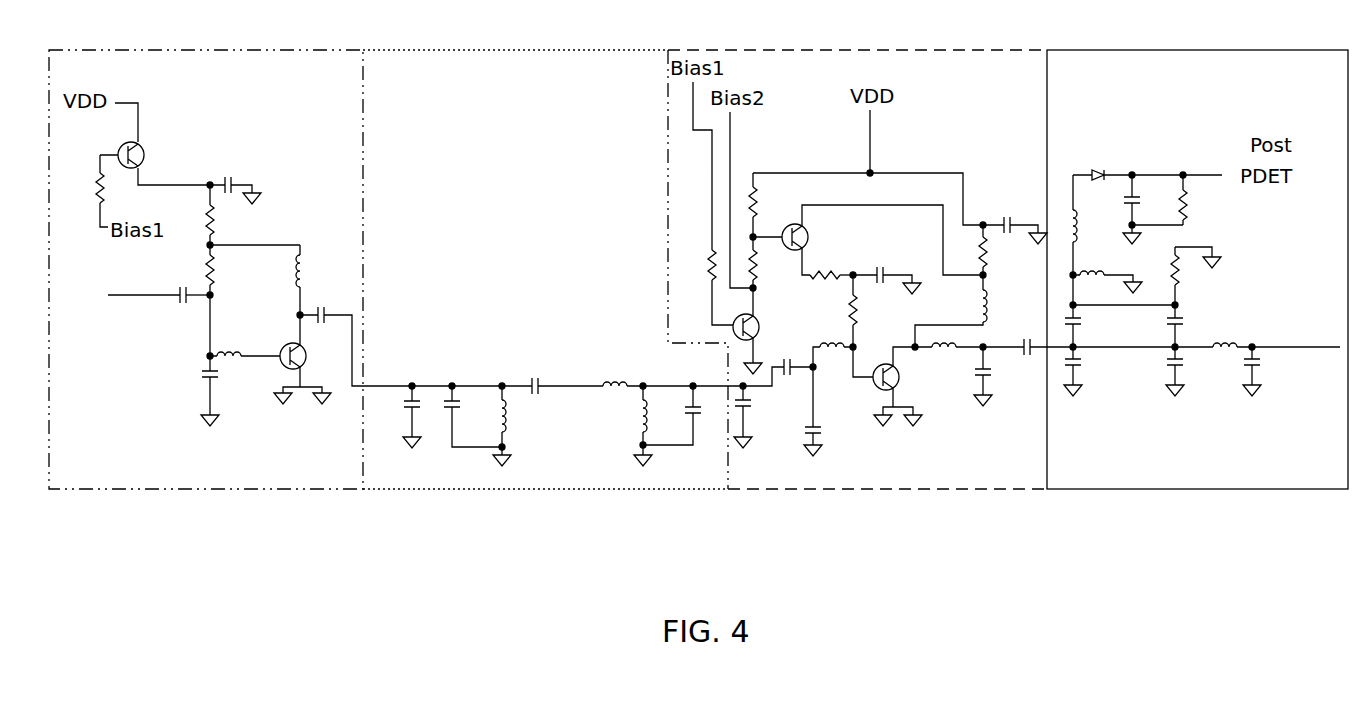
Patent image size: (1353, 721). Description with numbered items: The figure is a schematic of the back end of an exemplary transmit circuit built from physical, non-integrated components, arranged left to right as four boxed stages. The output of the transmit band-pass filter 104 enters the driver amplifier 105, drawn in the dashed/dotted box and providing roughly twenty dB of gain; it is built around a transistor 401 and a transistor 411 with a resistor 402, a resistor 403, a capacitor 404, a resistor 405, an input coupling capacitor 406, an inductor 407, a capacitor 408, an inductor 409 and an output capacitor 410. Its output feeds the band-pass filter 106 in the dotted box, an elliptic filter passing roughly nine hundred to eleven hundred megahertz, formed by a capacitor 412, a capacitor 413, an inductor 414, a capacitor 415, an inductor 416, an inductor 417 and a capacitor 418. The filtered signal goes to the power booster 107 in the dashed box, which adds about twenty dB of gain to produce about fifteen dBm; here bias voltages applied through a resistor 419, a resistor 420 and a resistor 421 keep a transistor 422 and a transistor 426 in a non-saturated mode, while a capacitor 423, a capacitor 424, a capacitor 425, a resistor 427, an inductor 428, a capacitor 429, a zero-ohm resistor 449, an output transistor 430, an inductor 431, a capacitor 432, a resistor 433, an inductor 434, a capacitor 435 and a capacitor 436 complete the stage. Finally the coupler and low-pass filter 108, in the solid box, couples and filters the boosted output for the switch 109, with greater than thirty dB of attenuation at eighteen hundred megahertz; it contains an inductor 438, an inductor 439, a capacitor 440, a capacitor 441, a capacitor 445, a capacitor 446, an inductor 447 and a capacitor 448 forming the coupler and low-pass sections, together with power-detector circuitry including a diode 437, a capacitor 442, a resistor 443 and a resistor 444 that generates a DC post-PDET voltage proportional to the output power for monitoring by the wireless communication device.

The transmit band-pass filter 104 is at (120, 301).
The driver amplifier 105 is at (206, 249).
The transmit band-pass filter 106 is at (545, 249).
The power booster 107 is at (857, 249).
The coupler and low-pass filter 108 is at (1197, 249).
The switch 109 is at (1296, 304).
The transistor 401 is at (155, 157).
The resistor 402 is at (87, 191).
The resistor 403 is at (191, 215).
The capacitor 404 is at (245, 180).
The resistor 405 is at (233, 270).
The capacitor 406 is at (177, 285).
The inductor 407 is at (245, 342).
The capacitor 408 is at (190, 391).
The inductor 409 is at (284, 280).
The capacitor 410 is at (332, 329).
The transistor 411 is at (313, 359).
The capacitor 412 is at (397, 417).
The capacitor 413 is at (467, 397).
The inductor 414 is at (521, 426).
The capacitor 415 is at (539, 371).
The inductor 416 is at (606, 372).
The inductor 417 is at (624, 426).
The capacitor 418 is at (672, 415).
The resistor 419 is at (703, 287).
The resistor 420 is at (772, 205).
The resistor 421 is at (774, 262).
The transistor 422 is at (764, 331).
The capacitor 423 is at (778, 357).
The capacitor 424 is at (765, 417).
The capacitor 425 is at (794, 411).
The transistor 426 is at (868, 240).
The resistor 427 is at (830, 287).
The inductor 428 is at (834, 365).
The capacitor 429 is at (887, 266).
The transistor 430 is at (882, 386).
The inductor 431 is at (949, 362).
The capacitor 432 is at (1015, 216).
The resistor 433 is at (1003, 250).
The inductor 434 is at (1005, 298).
The capacitor 435 is at (1028, 335).
The capacitor 436 is at (1005, 376).
The diode 437 is at (1147, 159).
The inductor 438 is at (1095, 225).
The inductor 439 is at (1107, 273).
The capacitor 440 is at (1095, 326).
The capacitor 441 is at (1094, 371).
The capacitor 442 is at (1153, 209).
The resistor 443 is at (1204, 200).
The resistor 444 is at (1196, 276).
The capacitor 445 is at (1198, 326).
The capacitor 446 is at (1196, 371).
The inductor 447 is at (1243, 332).
The capacitor 448 is at (1274, 371).
The resistor 449 is at (875, 311).